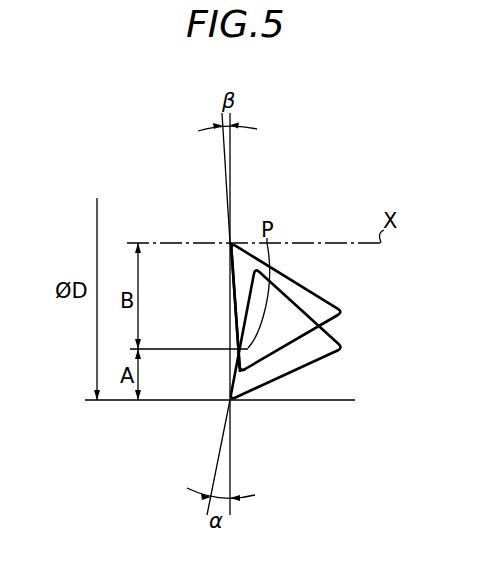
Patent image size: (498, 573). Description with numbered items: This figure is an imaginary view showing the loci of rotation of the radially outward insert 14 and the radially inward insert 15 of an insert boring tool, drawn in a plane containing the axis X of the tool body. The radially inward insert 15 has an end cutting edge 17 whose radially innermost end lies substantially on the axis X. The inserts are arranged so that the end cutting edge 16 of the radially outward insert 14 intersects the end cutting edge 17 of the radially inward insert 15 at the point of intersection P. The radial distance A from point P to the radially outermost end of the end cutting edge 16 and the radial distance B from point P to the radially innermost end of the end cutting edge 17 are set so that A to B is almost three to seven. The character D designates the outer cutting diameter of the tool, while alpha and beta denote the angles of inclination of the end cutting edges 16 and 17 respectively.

The radially outward insert 14 is at (302, 370).
The radially inward insert 15 is at (298, 283).
The end cutting edge of the radially outward insert 16 is at (236, 369).
The end cutting edge of the radially inward insert 17 is at (233, 310).